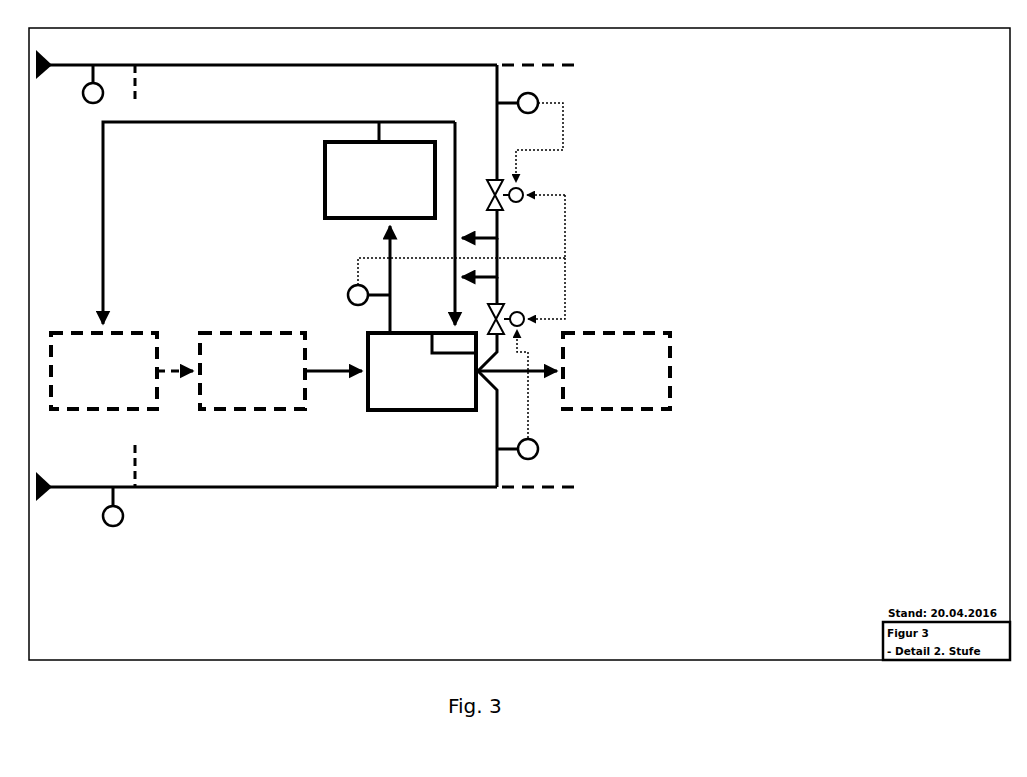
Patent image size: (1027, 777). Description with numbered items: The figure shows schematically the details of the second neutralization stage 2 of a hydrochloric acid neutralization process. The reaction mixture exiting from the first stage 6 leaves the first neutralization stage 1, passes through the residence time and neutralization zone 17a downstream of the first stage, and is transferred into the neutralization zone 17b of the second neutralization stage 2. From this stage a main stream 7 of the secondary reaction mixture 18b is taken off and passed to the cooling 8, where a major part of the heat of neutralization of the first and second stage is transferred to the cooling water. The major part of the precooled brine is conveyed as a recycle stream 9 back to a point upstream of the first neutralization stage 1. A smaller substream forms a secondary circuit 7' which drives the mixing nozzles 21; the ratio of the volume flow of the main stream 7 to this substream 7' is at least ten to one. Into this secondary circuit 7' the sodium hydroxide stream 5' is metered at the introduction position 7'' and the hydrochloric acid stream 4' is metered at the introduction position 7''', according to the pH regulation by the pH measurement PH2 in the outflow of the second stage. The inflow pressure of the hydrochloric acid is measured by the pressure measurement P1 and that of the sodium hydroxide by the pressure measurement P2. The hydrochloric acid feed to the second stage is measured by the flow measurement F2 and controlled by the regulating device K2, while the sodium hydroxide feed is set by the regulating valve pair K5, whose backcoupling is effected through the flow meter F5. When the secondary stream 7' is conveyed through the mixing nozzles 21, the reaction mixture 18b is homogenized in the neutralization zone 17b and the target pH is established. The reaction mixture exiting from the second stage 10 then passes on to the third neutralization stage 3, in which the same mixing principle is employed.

The first neutralization stage 1 is at (104, 371).
The residence time and neutralization zone downstream of the first stage 17a is at (231, 371).
The second neutralization stage 2 is at (422, 380).
The mixing nozzles of the second stage 21 is at (454, 343).
The third neutralization stage 3 is at (616, 371).
The cooling of the first and second neutralization stage 8 is at (380, 180).
The hydrochloric acid stream for setting the target pH in second and third stage 4' is at (309, 76).
The sodium hydroxide stream for setting the target pH in second and third stage 5' is at (309, 475).
The reaction mixture exiting from the first stage 6 is at (333, 381).
The main stream from the second neutralization stage 7 is at (385, 279).
The smaller secondary circuit of partially neutralized hydrochloric acid from main s 7' is at (445, 223).
The introduction of sodium hydroxide into the secondary circuit of the second neutra 7'' is at (488, 271).
The introduction of hydrochloric acid into the secondary circuit of the second neutr 7''' is at (490, 224).
The recirculation of cooled reaction mixture of the second stage 9 is at (279, 223).
The reaction mixture exiting from the second stage 10 is at (516, 380).
The neutralization zone of the second stage 17b is at (366, 404).
The secondary reaction mixture of the second stage 18b is at (462, 403).
The inflow pressure measurement for hydrochloric acid P1 is at (90, 91).
The inflow pressure measurement for sodium hydroxide P2 is at (110, 514).
The flow measurement of hydrochloric acid feed to second neutralization stage F2 is at (530, 123).
The flow measurement for sodium hydroxide feed to second neutralization stage F5 is at (520, 408).
The regulating device for hydrochloric acid feed to second neutralization stage K2 is at (526, 219).
The regulating valve pair for sodium hydroxide feed to second neutralization stage K5 is at (526, 296).
The pH measurement after second neutralization stage for pH regulation PH2 is at (441, 281).